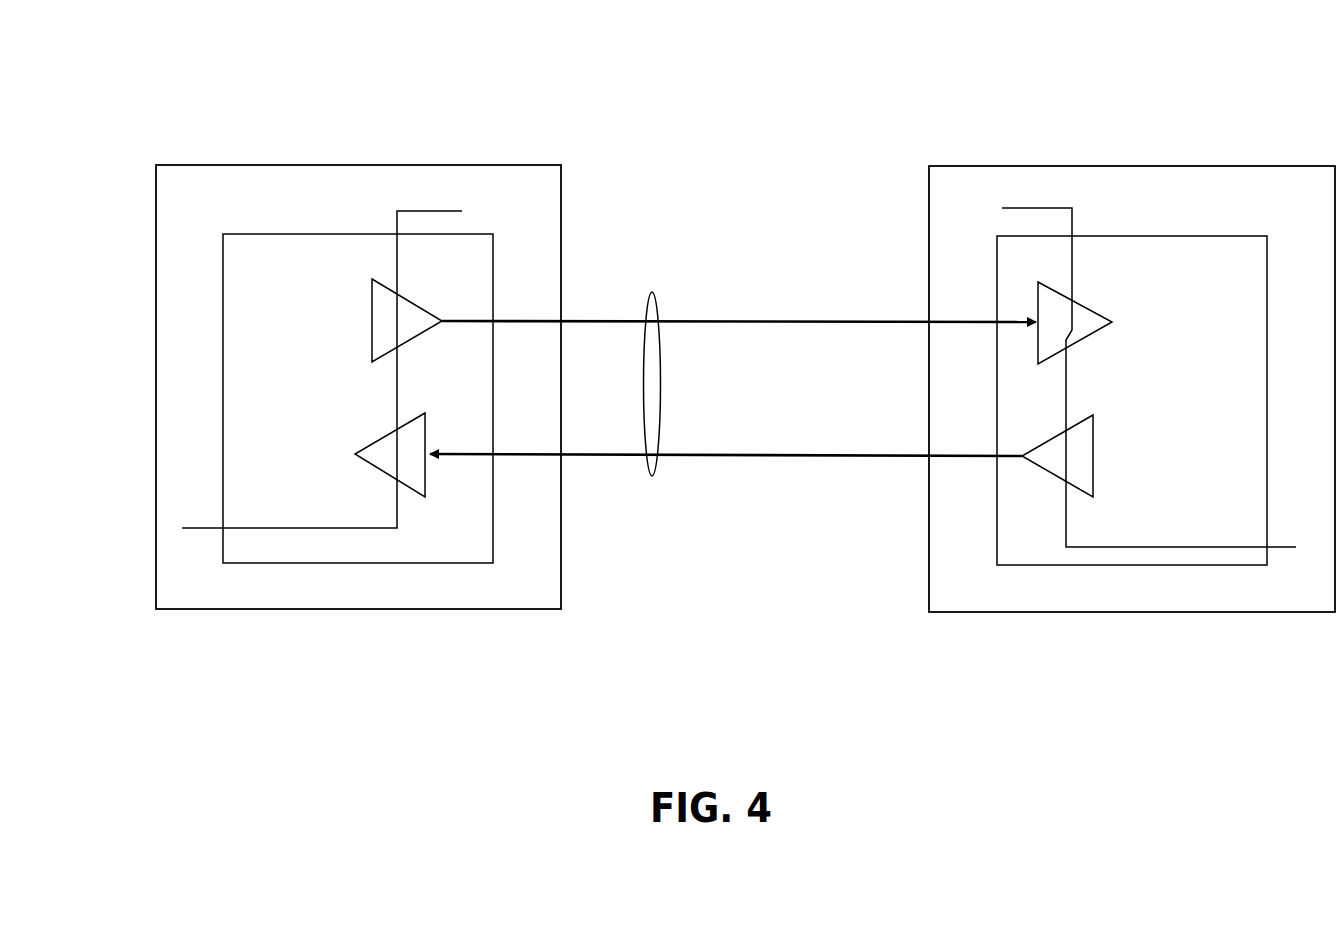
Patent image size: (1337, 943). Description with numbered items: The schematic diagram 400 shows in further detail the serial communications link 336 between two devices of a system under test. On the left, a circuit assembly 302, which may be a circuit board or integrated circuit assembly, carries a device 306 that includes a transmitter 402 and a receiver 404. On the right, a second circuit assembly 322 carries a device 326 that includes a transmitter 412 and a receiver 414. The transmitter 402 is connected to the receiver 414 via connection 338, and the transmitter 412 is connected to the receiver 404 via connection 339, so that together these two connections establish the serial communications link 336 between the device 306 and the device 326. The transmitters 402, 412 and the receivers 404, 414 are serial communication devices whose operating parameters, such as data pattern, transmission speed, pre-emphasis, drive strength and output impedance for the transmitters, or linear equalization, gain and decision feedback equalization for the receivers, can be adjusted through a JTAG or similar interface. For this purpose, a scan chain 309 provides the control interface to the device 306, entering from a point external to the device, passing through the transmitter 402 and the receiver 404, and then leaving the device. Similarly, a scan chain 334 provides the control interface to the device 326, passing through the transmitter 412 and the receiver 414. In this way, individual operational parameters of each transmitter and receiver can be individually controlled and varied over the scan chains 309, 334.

The schematic diagram 400 is at (196, 45).
The circuit assembly 302 is at (204, 194).
The device 306 is at (271, 264).
The scan chain 309 is at (397, 214).
The transmitter 402 is at (413, 298).
The receiver 404 is at (383, 438).
The serial communications link 336 is at (655, 298).
The connection 338 is at (752, 321).
The connection 339 is at (745, 455).
The circuit assembly 322 is at (978, 197).
The device 326 is at (1251, 267).
The scan chain 334 is at (1072, 212).
The receiver 414 is at (1080, 298).
The transmitter 412 is at (1094, 440).